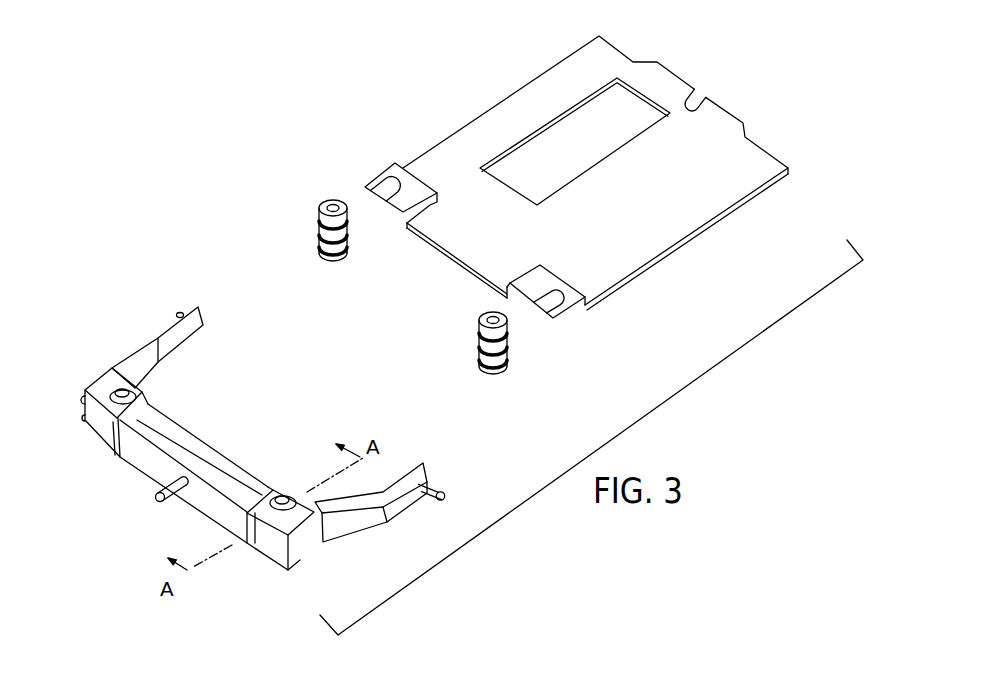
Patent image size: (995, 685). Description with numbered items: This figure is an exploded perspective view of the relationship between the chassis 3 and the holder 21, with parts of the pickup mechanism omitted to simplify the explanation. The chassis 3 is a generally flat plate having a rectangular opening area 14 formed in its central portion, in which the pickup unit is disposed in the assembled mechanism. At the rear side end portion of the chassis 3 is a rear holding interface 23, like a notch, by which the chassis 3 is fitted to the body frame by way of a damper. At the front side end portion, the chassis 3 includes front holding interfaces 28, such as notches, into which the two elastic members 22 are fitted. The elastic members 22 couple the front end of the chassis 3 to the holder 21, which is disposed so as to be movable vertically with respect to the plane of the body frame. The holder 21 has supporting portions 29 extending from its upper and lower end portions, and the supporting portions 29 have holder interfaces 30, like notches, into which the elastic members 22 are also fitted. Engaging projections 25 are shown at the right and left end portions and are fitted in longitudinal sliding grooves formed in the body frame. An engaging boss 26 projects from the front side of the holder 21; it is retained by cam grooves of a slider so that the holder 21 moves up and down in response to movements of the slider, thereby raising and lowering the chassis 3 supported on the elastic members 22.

The chassis 3 is at (675, 225).
The opening area 14 is at (625, 80).
The rear holding interface 23 is at (692, 93).
The front holding interface 28 is at (393, 177).
The elastic member 22 is at (318, 240).
The holder 21 is at (273, 547).
The supporting portion 29 is at (143, 400).
The holder interface 30 is at (118, 382).
The engaging projection 25 is at (83, 397).
The engaging boss 26 is at (160, 500).